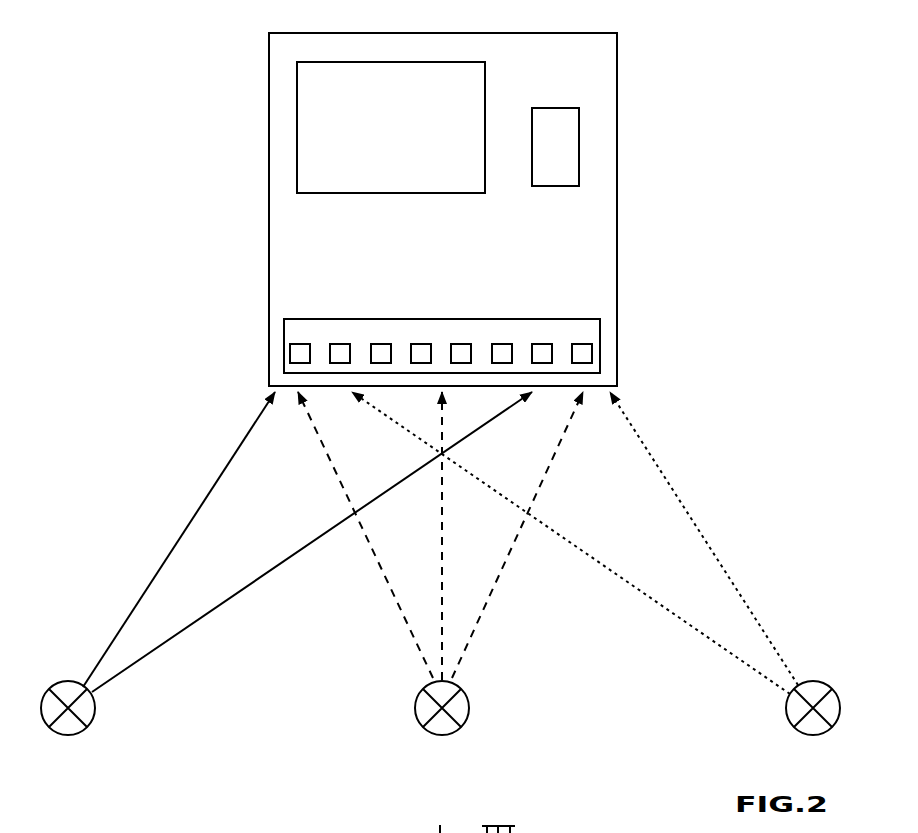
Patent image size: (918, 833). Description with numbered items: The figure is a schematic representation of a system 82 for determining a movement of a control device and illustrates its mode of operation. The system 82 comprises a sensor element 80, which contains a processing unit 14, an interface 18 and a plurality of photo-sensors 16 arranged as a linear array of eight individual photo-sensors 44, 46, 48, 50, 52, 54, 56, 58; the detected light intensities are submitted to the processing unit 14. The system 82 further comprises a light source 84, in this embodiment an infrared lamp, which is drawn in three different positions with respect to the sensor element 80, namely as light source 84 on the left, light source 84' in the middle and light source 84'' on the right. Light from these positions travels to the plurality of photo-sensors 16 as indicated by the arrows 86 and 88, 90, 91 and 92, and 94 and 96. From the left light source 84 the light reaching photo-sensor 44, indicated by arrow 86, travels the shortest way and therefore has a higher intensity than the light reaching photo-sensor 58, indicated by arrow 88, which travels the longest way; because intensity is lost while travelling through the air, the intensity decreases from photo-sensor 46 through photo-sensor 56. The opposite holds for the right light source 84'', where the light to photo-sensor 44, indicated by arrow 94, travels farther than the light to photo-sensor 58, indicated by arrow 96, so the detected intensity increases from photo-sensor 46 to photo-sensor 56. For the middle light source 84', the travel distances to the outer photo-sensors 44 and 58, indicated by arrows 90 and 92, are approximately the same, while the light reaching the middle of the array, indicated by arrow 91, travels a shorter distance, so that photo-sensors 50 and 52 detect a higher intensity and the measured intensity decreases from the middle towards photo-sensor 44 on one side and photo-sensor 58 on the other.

The sensor element 80 is at (617, 207).
The system 82 is at (130, 90).
The processing unit 14 is at (297, 110).
The interface 18 is at (579, 126).
The plurality of photo-sensors 16 is at (284, 335).
The photo-sensor 44 is at (298, 350).
The photo-sensor 46 is at (338, 350).
The photo-sensor 48 is at (380, 350).
The photo-sensor 50 is at (421, 350).
The photo-sensor 52 is at (461, 350).
The photo-sensor 54 is at (502, 350).
The photo-sensor 56 is at (543, 350).
The photo-sensor 58 is at (584, 350).
The light source 84 is at (98, 718).
The light source 84' is at (474, 718).
The light source 84'' is at (777, 714).
The arrow 86 is at (226, 466).
The arrow 88 is at (180, 636).
The arrow 90 is at (374, 555).
The arrow 91 is at (442, 423).
The arrow 92 is at (502, 568).
The arrow 94 is at (660, 602).
The arrow 96 is at (648, 458).